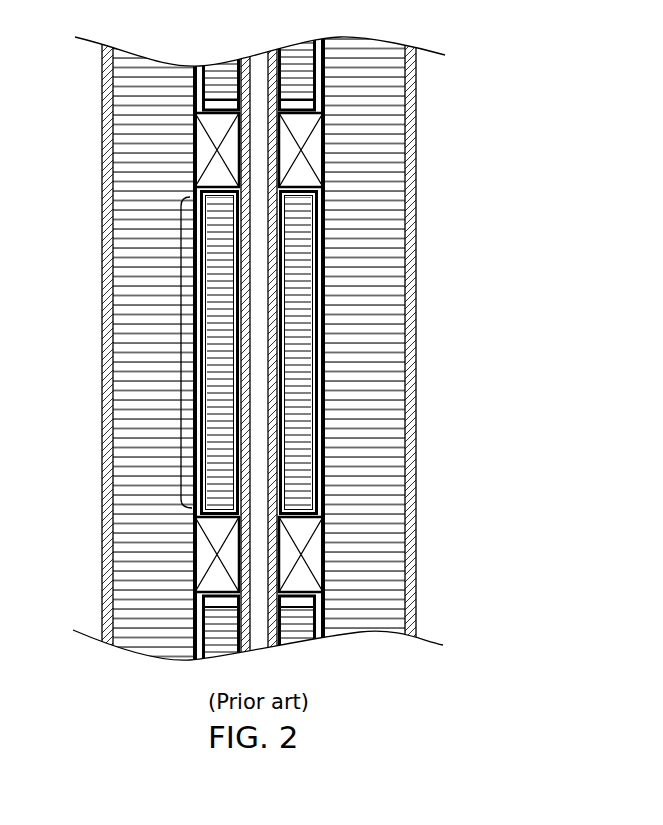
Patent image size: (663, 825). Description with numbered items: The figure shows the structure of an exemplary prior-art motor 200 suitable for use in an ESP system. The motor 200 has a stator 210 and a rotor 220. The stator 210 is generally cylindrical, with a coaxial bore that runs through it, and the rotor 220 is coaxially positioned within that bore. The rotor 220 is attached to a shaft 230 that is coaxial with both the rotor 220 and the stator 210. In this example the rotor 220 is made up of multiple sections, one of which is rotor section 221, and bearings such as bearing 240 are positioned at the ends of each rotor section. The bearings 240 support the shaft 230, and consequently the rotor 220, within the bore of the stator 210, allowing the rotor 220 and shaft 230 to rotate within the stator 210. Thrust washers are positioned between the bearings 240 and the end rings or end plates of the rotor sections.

The motor 200 is at (452, 234).
The stator 210 is at (417, 107).
The rotor 220 is at (314, 333).
The rotor section 221 is at (181, 343).
The shaft 230 is at (290, 635).
The bearing 240 is at (325, 160).